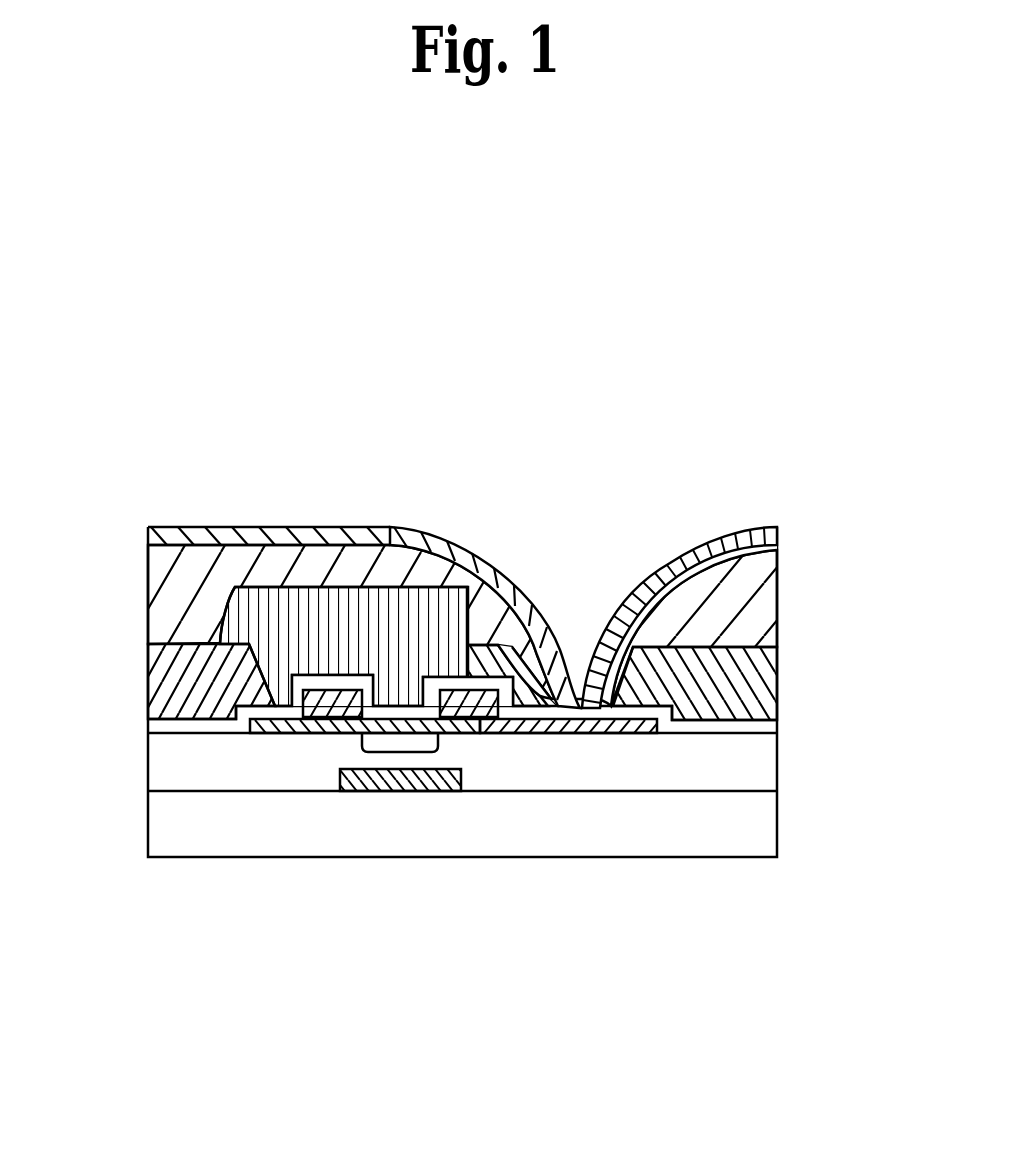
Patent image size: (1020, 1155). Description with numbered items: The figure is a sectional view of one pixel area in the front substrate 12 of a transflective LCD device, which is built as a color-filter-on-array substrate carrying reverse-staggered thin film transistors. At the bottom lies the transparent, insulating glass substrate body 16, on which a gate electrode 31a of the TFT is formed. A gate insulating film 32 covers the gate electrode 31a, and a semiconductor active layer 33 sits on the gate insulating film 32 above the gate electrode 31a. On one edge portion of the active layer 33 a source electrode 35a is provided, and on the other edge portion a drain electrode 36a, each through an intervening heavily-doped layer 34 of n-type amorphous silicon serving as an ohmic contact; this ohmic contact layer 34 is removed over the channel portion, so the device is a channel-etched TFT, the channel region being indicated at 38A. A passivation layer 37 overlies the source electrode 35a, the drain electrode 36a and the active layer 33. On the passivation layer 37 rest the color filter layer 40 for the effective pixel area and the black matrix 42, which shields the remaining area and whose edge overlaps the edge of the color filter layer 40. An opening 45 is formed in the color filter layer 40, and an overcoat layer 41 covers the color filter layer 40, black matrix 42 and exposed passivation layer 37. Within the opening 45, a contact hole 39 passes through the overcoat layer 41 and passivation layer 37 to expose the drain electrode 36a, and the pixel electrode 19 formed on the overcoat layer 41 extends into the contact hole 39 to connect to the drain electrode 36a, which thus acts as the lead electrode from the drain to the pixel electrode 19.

The front substrate 12 is at (724, 358).
The glass substrate body 16 is at (352, 830).
The pixel electrode 19 is at (372, 527).
The gate electrode 31a is at (327, 783).
The gate insulating film 32 is at (740, 767).
The semiconductor active layer 33 is at (362, 733).
The heavily-doped layer 34 is at (458, 707).
The source electrode 35a is at (250, 733).
The drain electrode 36a is at (560, 728).
The passivation layer 37 is at (772, 728).
The channel region 38A is at (400, 752).
The contact hole 39 is at (633, 625).
The color filter layer 40 is at (177, 673).
The overcoat layer 41 is at (772, 605).
The black matrix 42 is at (290, 600).
The opening 45 is at (596, 645).